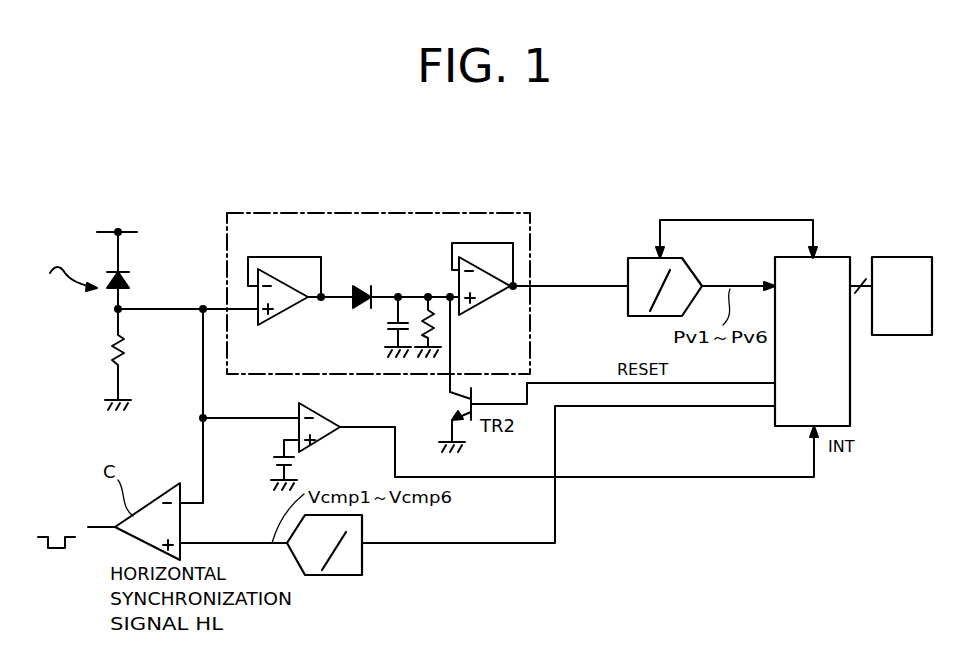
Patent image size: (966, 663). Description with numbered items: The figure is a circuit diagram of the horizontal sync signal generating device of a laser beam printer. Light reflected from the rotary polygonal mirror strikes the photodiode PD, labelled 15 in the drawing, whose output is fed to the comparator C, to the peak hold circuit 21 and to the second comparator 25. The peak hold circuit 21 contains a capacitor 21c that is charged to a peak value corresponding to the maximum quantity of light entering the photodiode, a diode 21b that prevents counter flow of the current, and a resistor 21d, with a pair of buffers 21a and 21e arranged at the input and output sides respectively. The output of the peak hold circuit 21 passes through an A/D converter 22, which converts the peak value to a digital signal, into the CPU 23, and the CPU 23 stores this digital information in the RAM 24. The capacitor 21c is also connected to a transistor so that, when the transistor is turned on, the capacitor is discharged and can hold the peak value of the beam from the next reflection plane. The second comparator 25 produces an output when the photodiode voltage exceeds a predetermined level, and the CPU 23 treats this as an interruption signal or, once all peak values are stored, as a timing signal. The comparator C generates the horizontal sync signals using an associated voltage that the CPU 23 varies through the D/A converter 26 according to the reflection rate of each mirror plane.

The photodiode PD 15 is at (115, 319).
The peak hold circuit 21 is at (513, 212).
The buffer 21a is at (273, 270).
The diode 21b is at (358, 286).
The capacitor 21c is at (388, 328).
The resistor 21d is at (430, 312).
The buffer 21e is at (490, 301).
The A/D converter 22 is at (632, 258).
The CPU 23 is at (838, 257).
The RAM 24 is at (909, 257).
The second comparator 25 is at (322, 416).
The D/A converter 26 is at (345, 578).